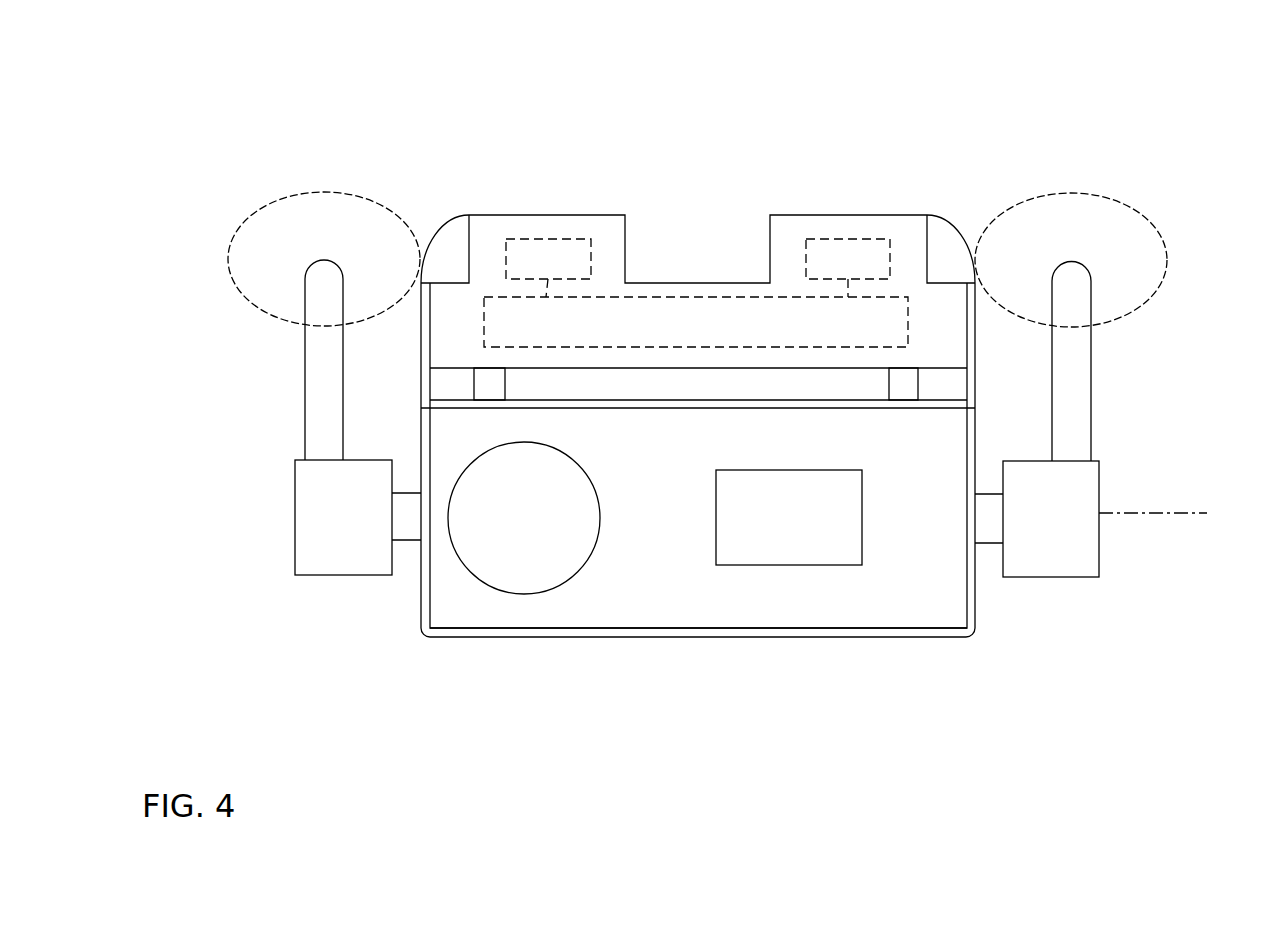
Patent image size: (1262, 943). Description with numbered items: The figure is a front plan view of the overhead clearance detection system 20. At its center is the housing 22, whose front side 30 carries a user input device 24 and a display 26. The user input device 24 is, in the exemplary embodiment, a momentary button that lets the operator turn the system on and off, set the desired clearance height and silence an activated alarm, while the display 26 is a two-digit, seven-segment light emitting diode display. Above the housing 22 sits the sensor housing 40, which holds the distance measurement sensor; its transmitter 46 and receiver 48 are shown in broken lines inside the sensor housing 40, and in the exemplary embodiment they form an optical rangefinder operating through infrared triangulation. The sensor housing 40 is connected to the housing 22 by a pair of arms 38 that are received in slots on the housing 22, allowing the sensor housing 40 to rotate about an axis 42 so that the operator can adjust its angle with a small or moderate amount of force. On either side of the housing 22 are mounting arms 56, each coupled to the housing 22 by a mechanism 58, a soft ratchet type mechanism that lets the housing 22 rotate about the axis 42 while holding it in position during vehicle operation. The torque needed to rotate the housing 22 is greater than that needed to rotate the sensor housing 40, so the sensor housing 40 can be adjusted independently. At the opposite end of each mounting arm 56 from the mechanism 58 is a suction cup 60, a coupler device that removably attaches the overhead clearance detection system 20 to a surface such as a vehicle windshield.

The overhead clearance detection system 20 is at (1176, 146).
The housing 22 is at (912, 637).
The user input device 24 is at (509, 530).
The display 26 is at (764, 528).
The front side 30 is at (636, 603).
The arms 38 is at (506, 382).
The sensor housing 40 is at (625, 228).
The axis 42 is at (1167, 513).
The transmitter 46 is at (558, 238).
The receiver 48 is at (829, 238).
The mounting arms 56 is at (305, 383).
The mechanism 58 is at (331, 577).
The suction cup 60 is at (232, 232).